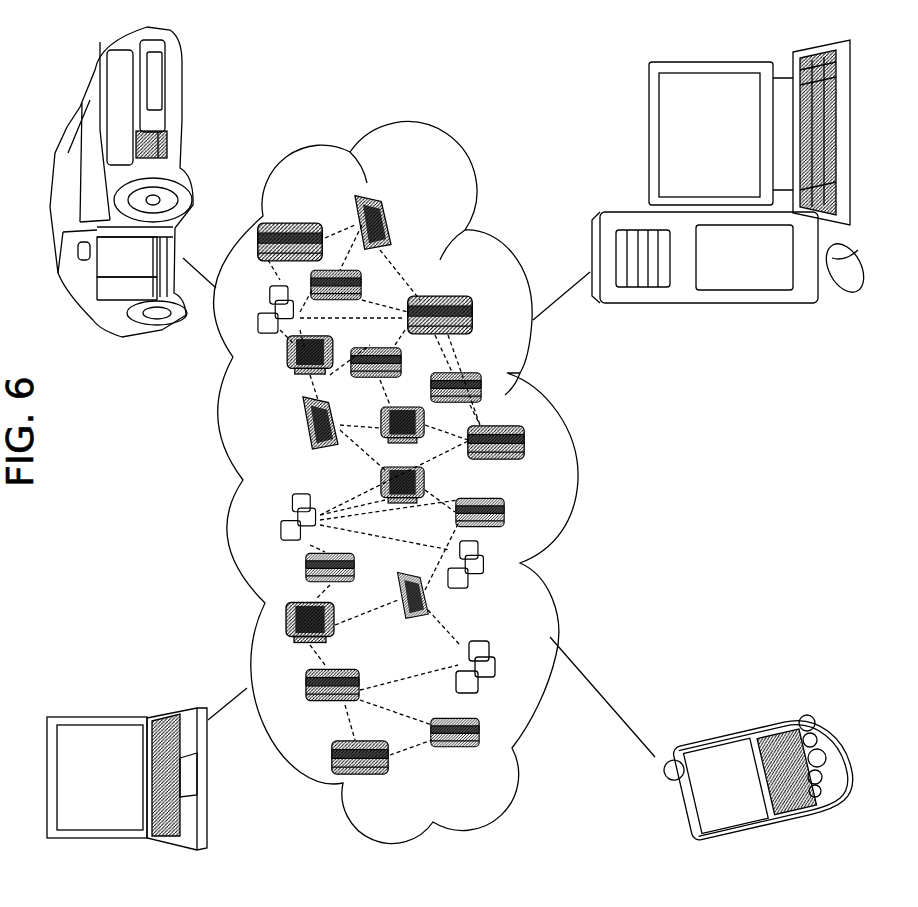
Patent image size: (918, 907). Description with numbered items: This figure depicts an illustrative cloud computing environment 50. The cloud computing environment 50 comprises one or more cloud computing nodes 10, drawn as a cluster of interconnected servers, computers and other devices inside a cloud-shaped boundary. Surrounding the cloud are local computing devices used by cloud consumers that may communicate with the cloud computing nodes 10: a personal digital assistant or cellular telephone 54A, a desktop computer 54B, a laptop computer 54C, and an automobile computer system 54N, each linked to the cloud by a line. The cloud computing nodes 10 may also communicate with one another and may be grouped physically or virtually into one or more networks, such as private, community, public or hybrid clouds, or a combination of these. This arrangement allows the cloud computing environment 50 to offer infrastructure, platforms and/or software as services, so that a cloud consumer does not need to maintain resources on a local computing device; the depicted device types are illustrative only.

The cloud computing environment 50 is at (373, 137).
The cloud computing node 10 is at (402, 177).
The automobile computer system 54N is at (125, 330).
The desktop computer 54B is at (648, 137).
The laptop computer 54C is at (108, 716).
The personal digital assistant (PDA) or cellular telephone 54A is at (742, 727).